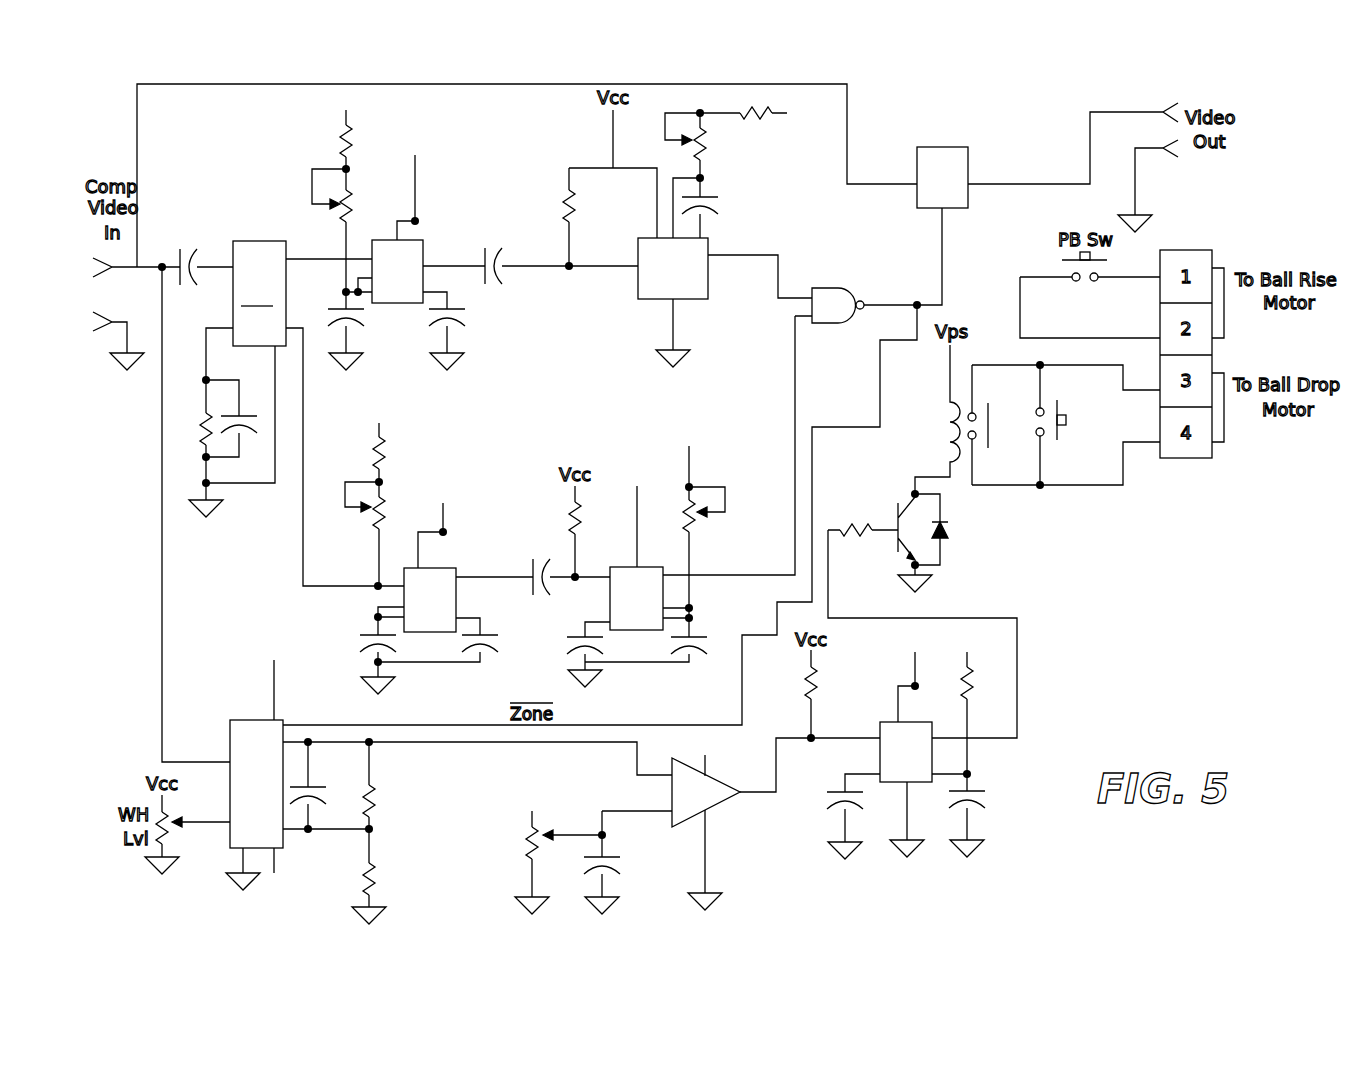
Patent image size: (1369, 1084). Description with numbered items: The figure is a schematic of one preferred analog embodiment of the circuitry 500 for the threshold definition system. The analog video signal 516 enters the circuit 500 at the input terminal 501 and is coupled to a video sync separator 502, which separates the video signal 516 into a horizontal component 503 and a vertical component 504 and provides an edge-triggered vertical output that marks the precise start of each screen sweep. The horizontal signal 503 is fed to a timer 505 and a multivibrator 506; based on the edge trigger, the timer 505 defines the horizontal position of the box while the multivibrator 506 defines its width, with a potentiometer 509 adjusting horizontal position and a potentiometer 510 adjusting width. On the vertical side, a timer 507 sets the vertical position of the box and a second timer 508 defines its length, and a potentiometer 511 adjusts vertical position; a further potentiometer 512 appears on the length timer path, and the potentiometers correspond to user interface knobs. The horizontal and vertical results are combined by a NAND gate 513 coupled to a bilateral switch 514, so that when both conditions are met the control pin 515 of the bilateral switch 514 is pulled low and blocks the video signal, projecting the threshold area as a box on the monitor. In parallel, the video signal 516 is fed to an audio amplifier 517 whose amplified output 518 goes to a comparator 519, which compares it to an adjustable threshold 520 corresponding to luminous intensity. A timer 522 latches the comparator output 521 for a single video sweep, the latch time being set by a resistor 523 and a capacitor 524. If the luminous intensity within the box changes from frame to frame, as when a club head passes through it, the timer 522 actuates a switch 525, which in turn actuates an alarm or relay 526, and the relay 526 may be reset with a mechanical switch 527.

The circuitry 500 is at (1072, 584).
The input terminal 501 is at (139, 265).
The video sync separator 502 is at (237, 379).
The horizontal component 503 is at (334, 262).
The vertical component 504 is at (303, 432).
The timer 505 is at (424, 248).
The multivibrator 506 is at (638, 298).
The timer 507 is at (455, 570).
The second timer 508 is at (610, 596).
The potentiometer 509 is at (306, 168).
The potentiometer 510 is at (693, 143).
The potentiometer 511 is at (373, 528).
The length potentiometer 512 is at (702, 505).
The NAND gate 513 is at (826, 300).
The bilateral switch 514 is at (947, 160).
The control pin 515 is at (940, 268).
The analog video signal 516 is at (162, 603).
The level detector 517 is at (265, 718).
The amplified output 518 is at (473, 744).
The comparator 519 is at (716, 800).
The adjustable threshold 520 is at (526, 856).
The comparator output 521 is at (780, 783).
The timer 522 is at (884, 720).
The resistor 523 is at (977, 680).
The capacitor 524 is at (985, 793).
The switch 525 is at (896, 512).
The relay 526 is at (955, 412).
The mechanical switch 527 is at (1060, 438).